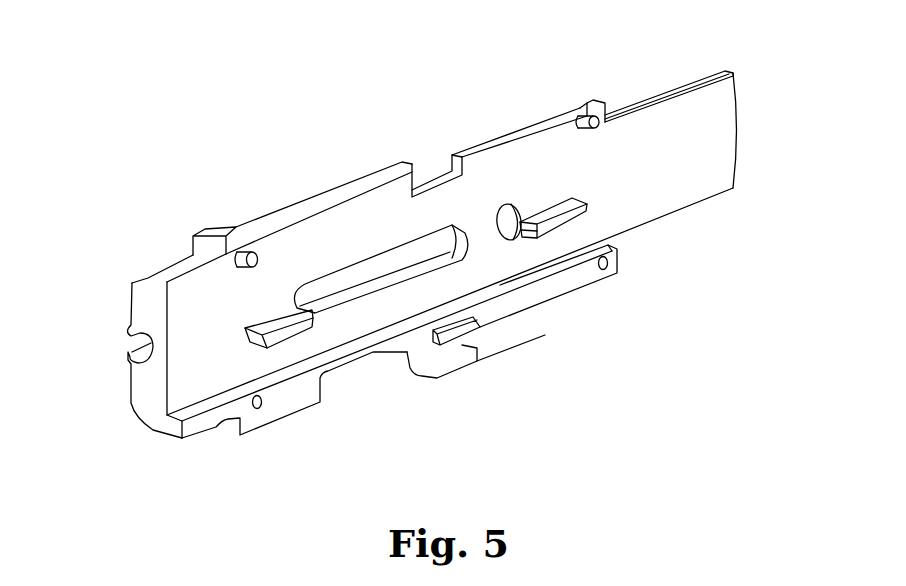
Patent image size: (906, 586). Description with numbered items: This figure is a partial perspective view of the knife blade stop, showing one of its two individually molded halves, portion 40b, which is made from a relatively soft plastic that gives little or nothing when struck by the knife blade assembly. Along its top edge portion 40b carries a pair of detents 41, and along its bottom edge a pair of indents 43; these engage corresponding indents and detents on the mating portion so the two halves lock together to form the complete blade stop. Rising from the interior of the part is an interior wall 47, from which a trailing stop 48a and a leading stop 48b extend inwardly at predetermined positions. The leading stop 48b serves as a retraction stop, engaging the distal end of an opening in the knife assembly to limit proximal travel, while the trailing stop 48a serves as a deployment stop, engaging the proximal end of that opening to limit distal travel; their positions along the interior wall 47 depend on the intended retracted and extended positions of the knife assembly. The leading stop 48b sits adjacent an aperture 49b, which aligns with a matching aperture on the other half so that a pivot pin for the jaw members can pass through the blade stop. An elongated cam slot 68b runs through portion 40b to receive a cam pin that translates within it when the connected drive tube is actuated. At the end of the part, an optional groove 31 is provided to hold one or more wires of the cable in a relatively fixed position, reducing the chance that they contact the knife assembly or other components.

The groove 31 is at (118, 349).
The portion 40b is at (398, 178).
The detents 41 is at (246, 249).
The indents 43 is at (261, 404).
The interior wall 47 is at (720, 137).
The trailing stop 48a is at (293, 328).
The leading stop 48b is at (580, 212).
The aperture 49b is at (519, 226).
The elongated cam slot 68b is at (398, 271).